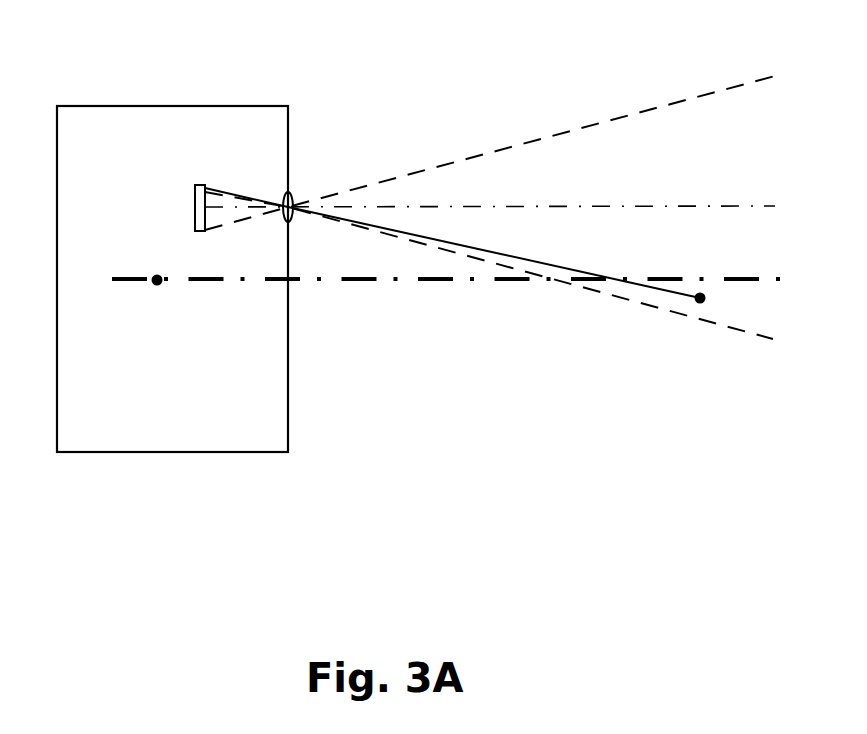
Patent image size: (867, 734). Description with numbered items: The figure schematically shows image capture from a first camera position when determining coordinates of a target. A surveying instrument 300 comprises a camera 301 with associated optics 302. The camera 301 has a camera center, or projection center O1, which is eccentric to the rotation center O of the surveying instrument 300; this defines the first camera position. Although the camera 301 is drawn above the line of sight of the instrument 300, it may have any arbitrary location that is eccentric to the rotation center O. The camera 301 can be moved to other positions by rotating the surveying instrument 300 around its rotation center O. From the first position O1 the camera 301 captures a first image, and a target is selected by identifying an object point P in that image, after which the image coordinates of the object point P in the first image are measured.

The surveying instrument 300 is at (143, 106).
The camera 301 is at (193, 220).
The optics 302 is at (283, 201).
The rotation center O is at (157, 283).
The projection center O1 is at (290, 193).
The object point P is at (700, 302).